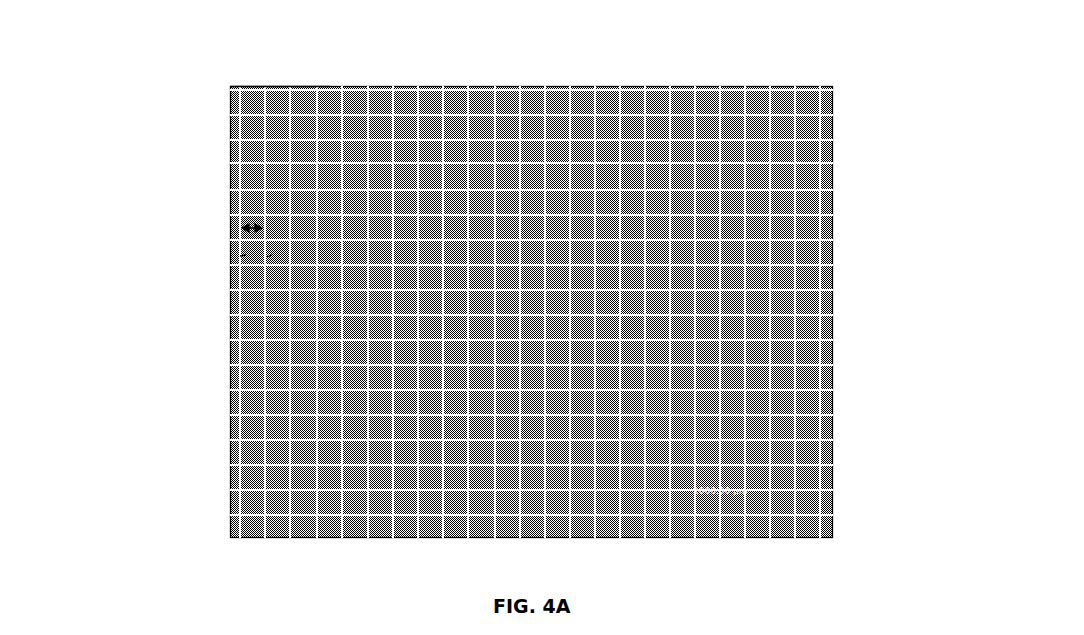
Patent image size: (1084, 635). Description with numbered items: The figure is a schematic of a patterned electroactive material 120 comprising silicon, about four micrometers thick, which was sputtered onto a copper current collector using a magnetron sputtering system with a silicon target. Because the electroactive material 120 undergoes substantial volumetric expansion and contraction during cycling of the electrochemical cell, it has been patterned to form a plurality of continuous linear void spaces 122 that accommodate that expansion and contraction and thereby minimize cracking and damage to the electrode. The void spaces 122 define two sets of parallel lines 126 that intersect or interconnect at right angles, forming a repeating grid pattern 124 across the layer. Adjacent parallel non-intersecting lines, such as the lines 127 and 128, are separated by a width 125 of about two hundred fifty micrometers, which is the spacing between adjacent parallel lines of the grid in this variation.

The electroactive material 120 is at (177, 152).
The continuous linear void spaces 122 is at (772, 215).
The repeating grid pattern 124 is at (834, 313).
The width 125 is at (253, 222).
The parallel lines 126 is at (263, 103).
The parallel non-intersecting line 127 is at (240, 256).
The parallel non-intersecting line 128 is at (267, 257).